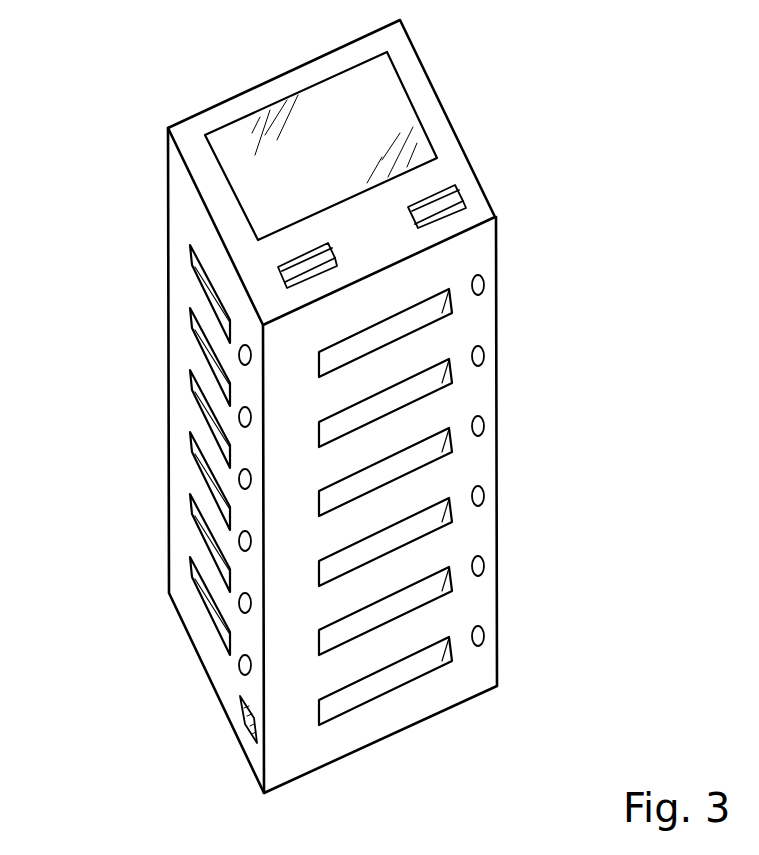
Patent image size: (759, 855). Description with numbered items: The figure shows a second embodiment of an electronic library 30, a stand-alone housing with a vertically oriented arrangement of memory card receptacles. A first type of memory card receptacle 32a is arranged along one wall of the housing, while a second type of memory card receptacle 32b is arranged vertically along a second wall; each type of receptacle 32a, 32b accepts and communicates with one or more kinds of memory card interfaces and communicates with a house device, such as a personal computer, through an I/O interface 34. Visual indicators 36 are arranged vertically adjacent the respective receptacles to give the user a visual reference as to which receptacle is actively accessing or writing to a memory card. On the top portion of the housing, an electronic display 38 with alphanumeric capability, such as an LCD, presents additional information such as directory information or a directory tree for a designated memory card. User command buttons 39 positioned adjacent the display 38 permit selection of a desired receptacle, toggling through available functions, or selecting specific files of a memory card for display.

The electronic library 30 is at (540, 90).
The electronic display 38 is at (300, 148).
The user command buttons 39 is at (297, 267).
The first type of memory card receptacle 32a is at (420, 313).
The second type of memory card receptacle 32b is at (195, 274).
The visual indicators 36 is at (239, 348).
The I/O interface 34 is at (247, 720).